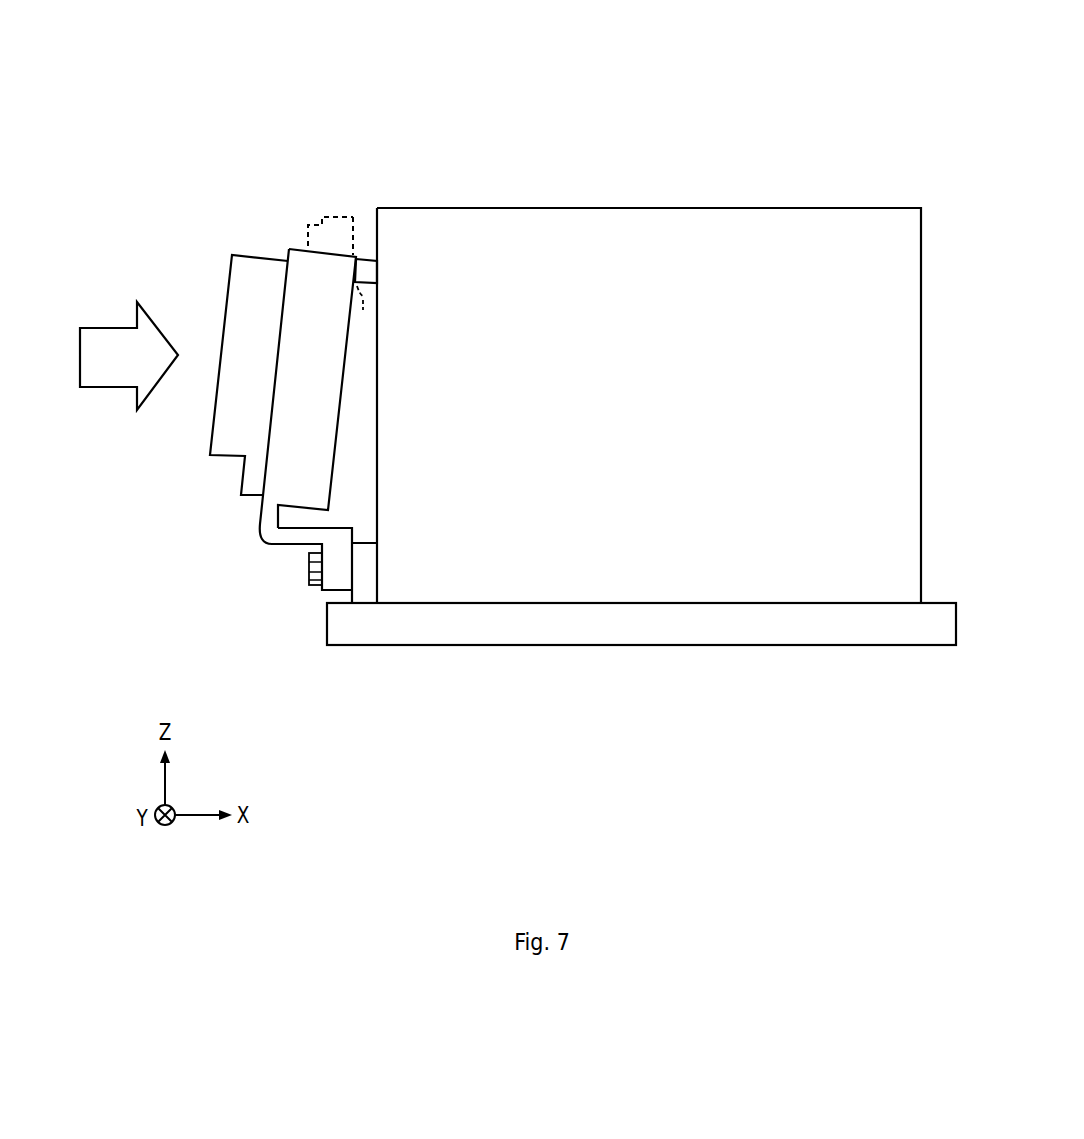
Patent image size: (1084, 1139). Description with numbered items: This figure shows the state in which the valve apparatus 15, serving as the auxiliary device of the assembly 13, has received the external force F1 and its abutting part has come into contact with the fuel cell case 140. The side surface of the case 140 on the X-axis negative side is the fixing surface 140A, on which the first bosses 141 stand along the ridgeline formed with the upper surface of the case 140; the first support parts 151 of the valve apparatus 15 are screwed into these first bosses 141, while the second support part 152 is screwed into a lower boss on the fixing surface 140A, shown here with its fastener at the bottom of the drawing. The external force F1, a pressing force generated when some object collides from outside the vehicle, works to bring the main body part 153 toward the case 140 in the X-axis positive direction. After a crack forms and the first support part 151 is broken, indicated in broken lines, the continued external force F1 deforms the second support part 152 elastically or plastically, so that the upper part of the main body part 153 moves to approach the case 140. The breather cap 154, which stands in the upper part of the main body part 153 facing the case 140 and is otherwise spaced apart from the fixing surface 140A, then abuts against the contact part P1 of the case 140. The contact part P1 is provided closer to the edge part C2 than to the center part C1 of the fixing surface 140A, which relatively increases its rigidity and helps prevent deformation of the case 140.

The holding unit 13 is at (263, 106).
The valve apparatus 15 is at (198, 260).
The case 140 is at (598, 208).
The fixing surface 140A is at (366, 393).
The first boss 141 is at (360, 210).
The first support part 151 is at (333, 247).
The second support part 152 is at (262, 538).
The main body part 153 is at (290, 247).
The breather cap 154 is at (378, 277).
The center part C1 is at (386, 408).
The edge part C2 is at (388, 198).
The contact part P1 is at (390, 257).
The external force F1 is at (111, 356).